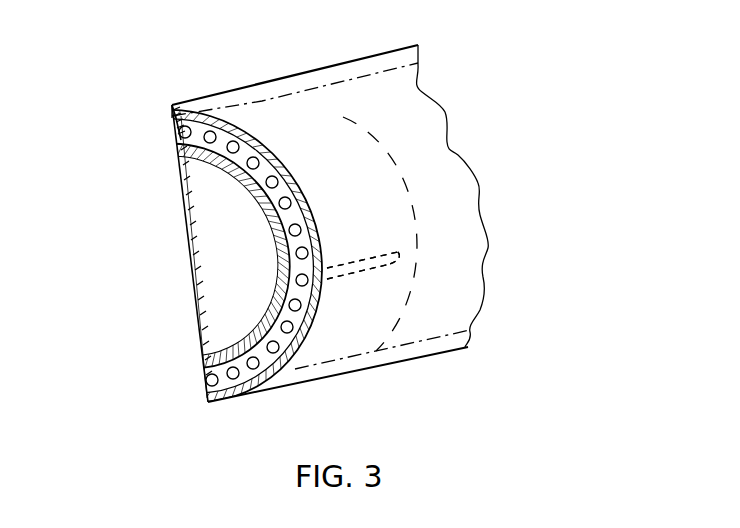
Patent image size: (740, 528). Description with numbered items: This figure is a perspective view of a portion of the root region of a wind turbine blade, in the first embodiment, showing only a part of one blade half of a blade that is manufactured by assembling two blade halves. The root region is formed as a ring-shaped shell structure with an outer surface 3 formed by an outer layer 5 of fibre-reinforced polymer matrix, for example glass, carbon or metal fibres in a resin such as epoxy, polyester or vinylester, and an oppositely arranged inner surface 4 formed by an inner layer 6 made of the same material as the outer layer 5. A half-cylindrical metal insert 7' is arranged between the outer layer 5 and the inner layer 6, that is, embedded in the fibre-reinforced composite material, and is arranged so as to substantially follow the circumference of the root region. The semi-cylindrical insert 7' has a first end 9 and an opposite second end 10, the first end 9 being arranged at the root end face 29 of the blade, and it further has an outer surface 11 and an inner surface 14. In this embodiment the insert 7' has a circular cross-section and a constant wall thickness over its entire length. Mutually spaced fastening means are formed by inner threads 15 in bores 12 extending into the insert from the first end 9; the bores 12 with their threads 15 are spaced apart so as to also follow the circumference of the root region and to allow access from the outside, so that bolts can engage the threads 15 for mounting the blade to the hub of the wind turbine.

The outer surface 3 is at (202, 99).
The inner surface 4 is at (183, 188).
The outer layer 5 is at (226, 404).
The inner layer 6 is at (232, 173).
The semi-cylindrical metal insert 7' is at (125, 138).
The first end 9 is at (203, 362).
The second end 10 is at (385, 144).
The outer surface of the insert 11 is at (307, 163).
The bore 12 is at (386, 266).
The inner surface of the insert 14 is at (260, 323).
The inner threads 15 is at (363, 265).
The root end face 29 is at (302, 366).